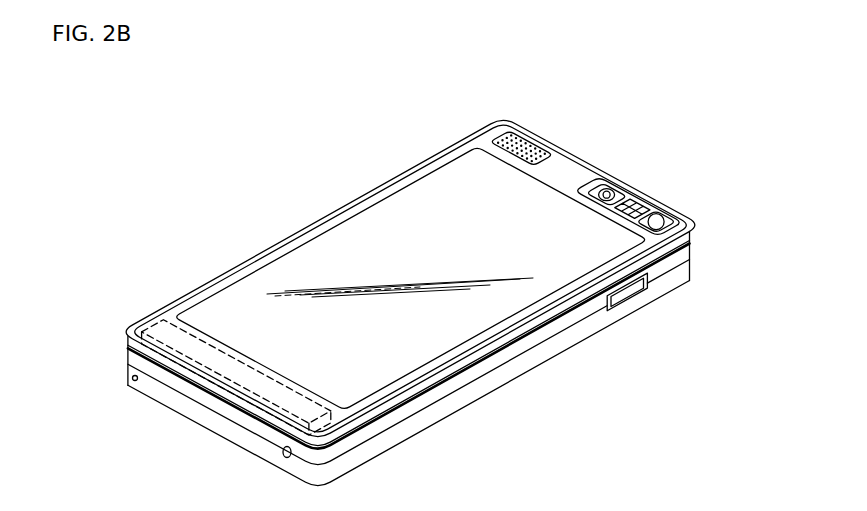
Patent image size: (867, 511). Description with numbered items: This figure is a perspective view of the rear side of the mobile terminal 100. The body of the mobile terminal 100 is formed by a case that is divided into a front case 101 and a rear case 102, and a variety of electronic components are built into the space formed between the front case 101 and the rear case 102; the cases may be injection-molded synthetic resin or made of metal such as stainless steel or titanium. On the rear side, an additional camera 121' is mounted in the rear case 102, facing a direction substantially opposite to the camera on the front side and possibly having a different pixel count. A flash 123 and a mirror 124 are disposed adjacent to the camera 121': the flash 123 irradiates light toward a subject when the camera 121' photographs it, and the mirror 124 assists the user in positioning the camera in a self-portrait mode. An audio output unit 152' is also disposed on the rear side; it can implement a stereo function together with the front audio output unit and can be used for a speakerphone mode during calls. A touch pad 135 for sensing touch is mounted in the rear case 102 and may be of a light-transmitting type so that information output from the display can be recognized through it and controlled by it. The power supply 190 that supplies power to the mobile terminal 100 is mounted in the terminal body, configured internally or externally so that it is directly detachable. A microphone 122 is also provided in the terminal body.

The mobile terminal 100 is at (378, 169).
The front case 101 is at (698, 268).
The rear case 102 is at (698, 246).
The camera 121' is at (633, 167).
The microphone 122 is at (130, 383).
The flash 123 is at (642, 206).
The mirror 124 is at (658, 220).
The touch pad 135 is at (323, 247).
The audio output unit 152' is at (541, 116).
The power supply 190 is at (150, 322).